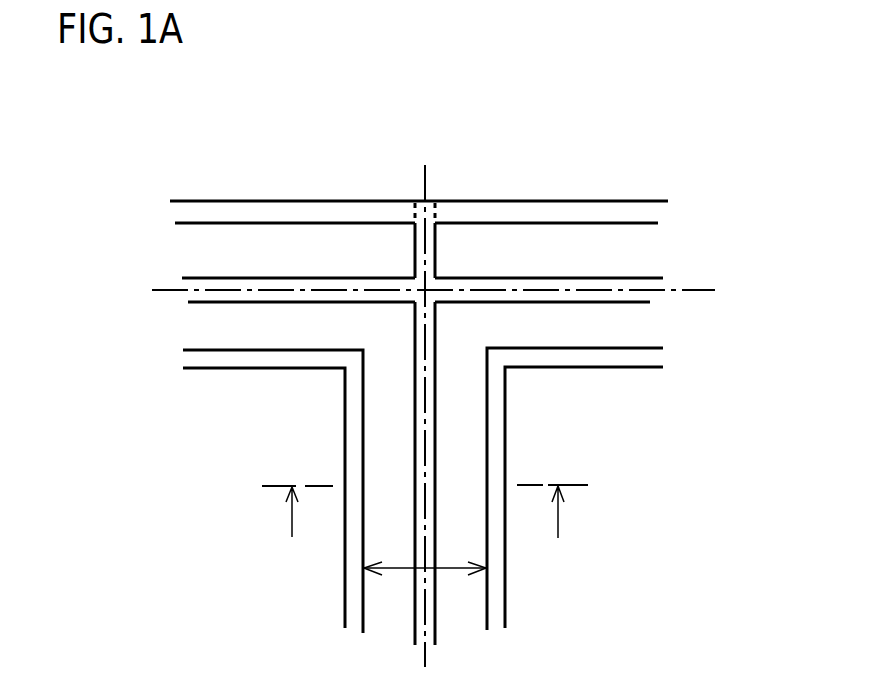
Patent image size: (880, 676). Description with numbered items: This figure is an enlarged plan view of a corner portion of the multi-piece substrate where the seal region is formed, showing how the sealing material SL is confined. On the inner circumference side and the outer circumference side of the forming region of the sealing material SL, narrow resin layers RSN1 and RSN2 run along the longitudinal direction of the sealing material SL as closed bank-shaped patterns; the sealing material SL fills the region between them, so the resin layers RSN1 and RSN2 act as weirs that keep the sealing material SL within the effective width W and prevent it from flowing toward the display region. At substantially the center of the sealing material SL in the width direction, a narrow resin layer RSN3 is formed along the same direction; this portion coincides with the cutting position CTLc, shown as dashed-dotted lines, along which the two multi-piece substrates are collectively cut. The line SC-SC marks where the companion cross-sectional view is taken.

The resin layer RSN1 is at (350, 425).
The resin layer RSN2 is at (532, 205).
The resin layer RSN3 is at (378, 278).
The sealing material SL is at (147, 225).
The cutting position CTLc is at (425, 178).
The line SC- SC is at (425, 532).
The width W is at (425, 552).